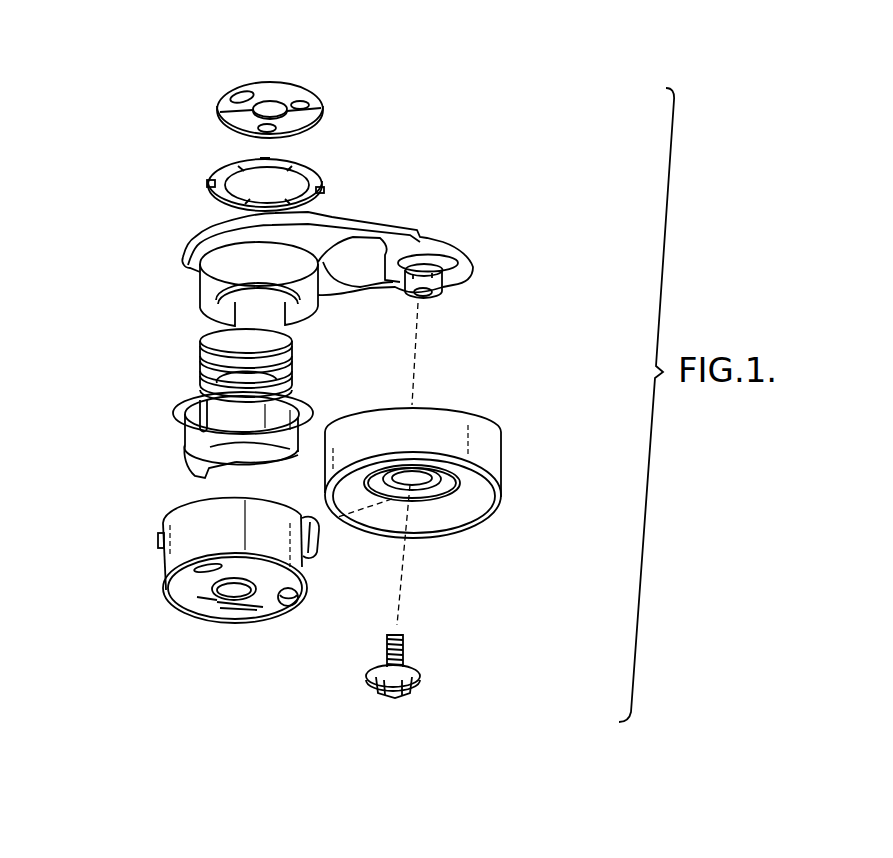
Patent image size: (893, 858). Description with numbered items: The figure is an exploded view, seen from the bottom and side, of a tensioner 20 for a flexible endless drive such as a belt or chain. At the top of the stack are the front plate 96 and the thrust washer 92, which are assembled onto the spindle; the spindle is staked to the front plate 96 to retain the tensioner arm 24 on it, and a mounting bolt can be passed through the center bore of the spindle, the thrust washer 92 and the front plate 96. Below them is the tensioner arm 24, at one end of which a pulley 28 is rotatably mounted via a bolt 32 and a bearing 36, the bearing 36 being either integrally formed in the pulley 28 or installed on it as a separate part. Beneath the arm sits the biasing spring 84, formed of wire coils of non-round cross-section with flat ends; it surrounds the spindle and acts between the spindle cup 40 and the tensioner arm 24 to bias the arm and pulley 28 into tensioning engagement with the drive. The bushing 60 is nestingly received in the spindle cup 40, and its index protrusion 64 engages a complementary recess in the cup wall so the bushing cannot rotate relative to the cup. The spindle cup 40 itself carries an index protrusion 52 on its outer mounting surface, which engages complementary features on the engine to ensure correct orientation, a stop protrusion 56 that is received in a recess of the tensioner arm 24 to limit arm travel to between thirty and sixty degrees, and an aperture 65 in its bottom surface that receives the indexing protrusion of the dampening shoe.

The tensioner 20 is at (153, 181).
The tensioner arm 24 is at (348, 212).
The pulley 28 is at (439, 480).
The bolt 32 is at (405, 645).
The bearing 36 is at (447, 498).
The spindle cup 40 is at (237, 585).
The index feature or protrusion 52 is at (298, 598).
The stop or protrusion 56 is at (318, 532).
The bushing 60 is at (199, 434).
The index feature or protrusion 64 is at (190, 415).
The aperture 65 is at (193, 575).
The biasing spring 84 is at (197, 350).
The thrust washer 92 is at (215, 184).
The front plate 96 is at (240, 82).